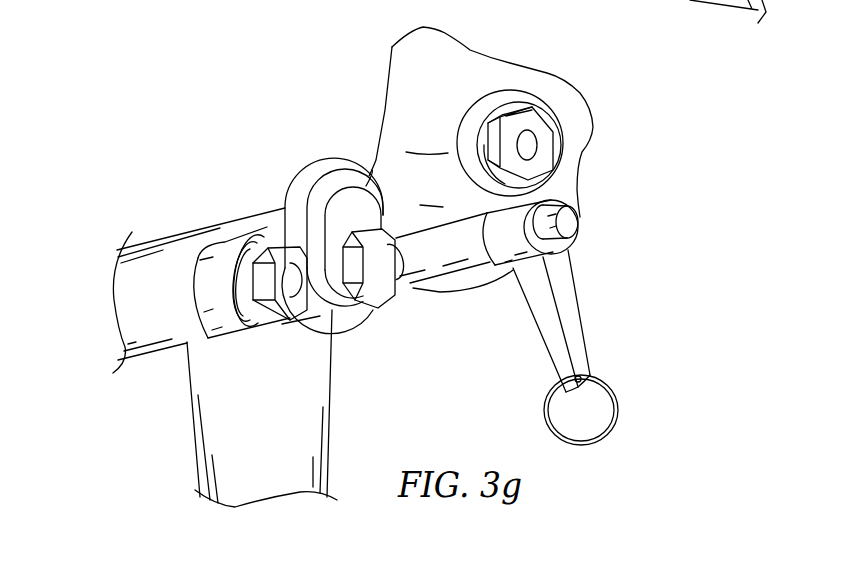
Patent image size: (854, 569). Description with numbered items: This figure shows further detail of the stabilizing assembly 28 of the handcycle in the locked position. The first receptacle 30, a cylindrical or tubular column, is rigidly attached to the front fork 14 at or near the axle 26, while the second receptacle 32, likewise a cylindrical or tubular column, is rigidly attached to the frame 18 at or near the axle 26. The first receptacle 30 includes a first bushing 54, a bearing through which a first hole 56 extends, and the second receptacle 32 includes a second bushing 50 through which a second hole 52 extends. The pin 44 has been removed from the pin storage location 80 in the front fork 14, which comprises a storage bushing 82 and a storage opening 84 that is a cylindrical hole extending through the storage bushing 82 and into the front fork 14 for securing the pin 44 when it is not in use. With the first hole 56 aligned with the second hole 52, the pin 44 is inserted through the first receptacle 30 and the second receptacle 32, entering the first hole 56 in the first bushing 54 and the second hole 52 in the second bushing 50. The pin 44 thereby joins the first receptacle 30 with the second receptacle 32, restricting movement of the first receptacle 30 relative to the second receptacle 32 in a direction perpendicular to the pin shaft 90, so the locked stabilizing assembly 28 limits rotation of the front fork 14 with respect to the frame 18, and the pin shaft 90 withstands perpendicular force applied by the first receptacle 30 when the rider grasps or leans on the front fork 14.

The front fork 14 is at (488, 159).
The frame 18 is at (215, 418).
The axle 26 is at (127, 289).
The stabilizing assembly 28 is at (172, 97).
The first receptacle 30 is at (333, 310).
The second receptacle 32 is at (200, 275).
The pin 44 is at (627, 259).
The second bushing 50 is at (260, 277).
The second hole 52 is at (295, 275).
The first bushing 54 is at (393, 292).
The first hole 56 is at (380, 262).
The pin storage location 80 is at (520, 90).
The storage bushing 82 is at (527, 120).
The storage opening 84 is at (527, 145).
The pin shaft 90 is at (443, 267).